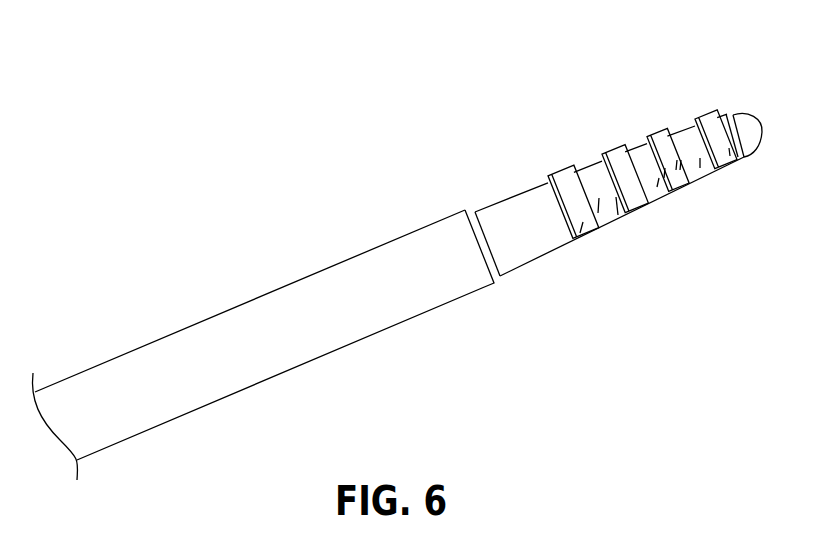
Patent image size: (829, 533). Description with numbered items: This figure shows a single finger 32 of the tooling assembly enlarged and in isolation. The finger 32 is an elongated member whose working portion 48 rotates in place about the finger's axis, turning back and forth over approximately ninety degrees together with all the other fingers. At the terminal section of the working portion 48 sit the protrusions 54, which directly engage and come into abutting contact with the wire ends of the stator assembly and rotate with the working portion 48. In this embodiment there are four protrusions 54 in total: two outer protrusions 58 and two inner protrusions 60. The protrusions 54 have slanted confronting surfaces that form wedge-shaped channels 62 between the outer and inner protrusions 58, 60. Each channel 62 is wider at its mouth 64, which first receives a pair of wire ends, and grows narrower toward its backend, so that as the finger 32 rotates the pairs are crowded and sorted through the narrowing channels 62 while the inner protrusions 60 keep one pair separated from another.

The finger 32 is at (248, 300).
The working portion 48 is at (352, 293).
The protrusions 54 is at (706, 119).
The outer protrusions 58 is at (580, 233).
The inner protrusions 60 is at (657, 187).
The wedge-shaped channels 62 is at (598, 213).
The mouth 64 is at (618, 215).